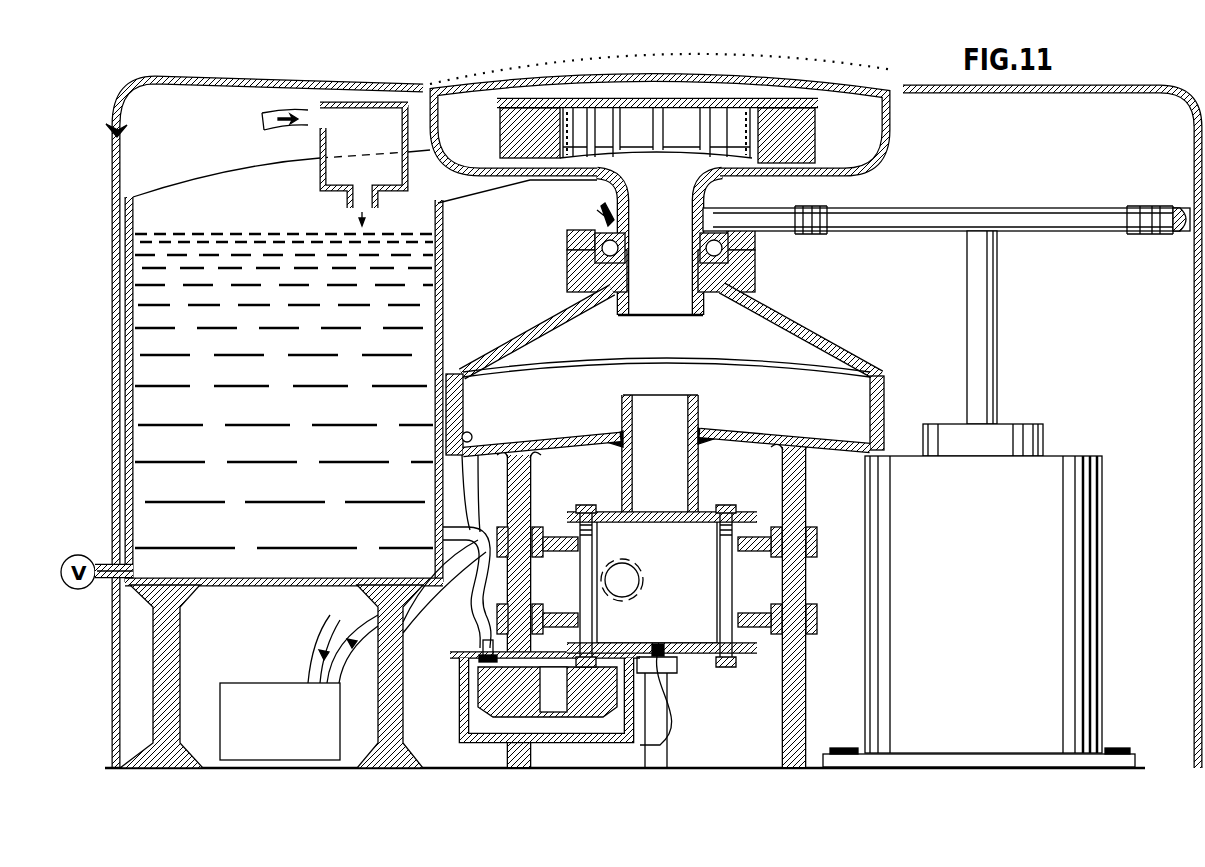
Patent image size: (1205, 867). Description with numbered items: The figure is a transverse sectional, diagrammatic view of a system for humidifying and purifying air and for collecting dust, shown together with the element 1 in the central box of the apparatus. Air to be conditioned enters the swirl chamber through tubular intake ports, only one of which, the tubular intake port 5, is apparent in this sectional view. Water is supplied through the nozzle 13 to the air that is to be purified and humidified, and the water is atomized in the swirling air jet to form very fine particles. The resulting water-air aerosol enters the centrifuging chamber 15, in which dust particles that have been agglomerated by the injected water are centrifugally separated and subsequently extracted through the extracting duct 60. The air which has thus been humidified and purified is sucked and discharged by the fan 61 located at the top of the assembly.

The housing box 1 is at (693, 569).
The tubular intake port 5 is at (620, 569).
The nozzle 13 is at (658, 645).
The centrifuging chamber 15 is at (826, 359).
The extracting duct 60 is at (471, 434).
The fan 61 is at (878, 138).